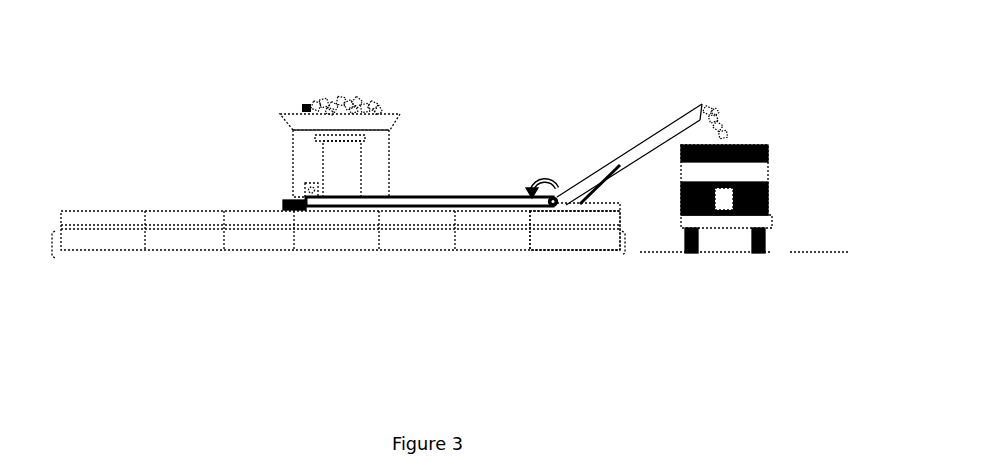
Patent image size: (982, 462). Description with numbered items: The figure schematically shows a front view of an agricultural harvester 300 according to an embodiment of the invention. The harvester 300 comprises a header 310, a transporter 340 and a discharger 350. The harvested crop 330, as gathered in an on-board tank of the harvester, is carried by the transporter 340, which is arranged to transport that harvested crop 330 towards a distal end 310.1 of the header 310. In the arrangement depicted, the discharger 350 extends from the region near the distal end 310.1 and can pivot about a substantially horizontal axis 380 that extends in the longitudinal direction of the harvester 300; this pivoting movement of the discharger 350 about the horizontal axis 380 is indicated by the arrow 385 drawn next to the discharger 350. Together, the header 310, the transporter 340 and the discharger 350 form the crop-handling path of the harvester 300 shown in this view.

The agricultural harvester 300 is at (233, 115).
The header 310 is at (158, 240).
The distal end 310.1 is at (558, 258).
The harvested crop 330 is at (345, 100).
The transporter 340 is at (463, 197).
The discharger 350 is at (650, 137).
The horizontal axis 380 is at (553, 205).
The arrow 385 is at (530, 162).